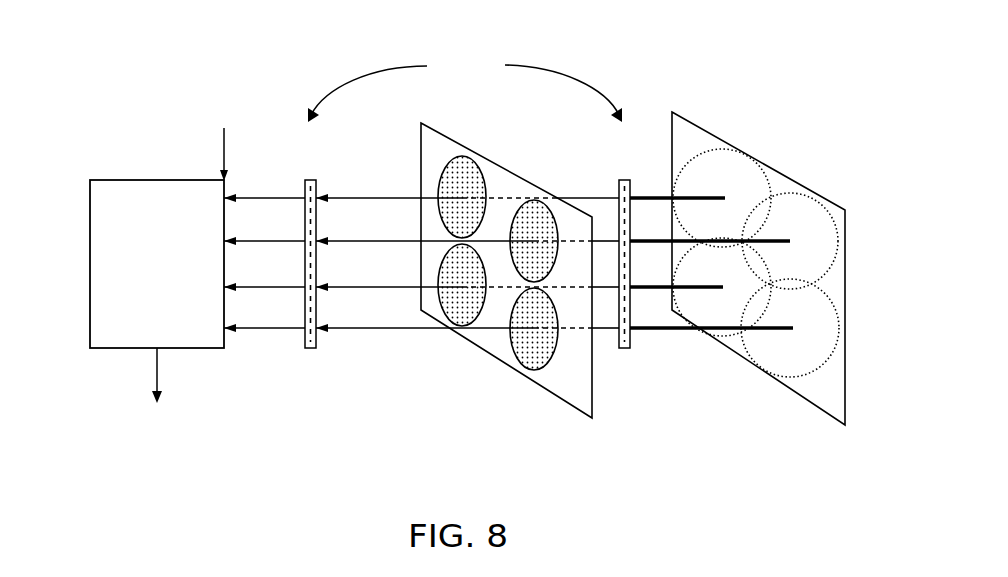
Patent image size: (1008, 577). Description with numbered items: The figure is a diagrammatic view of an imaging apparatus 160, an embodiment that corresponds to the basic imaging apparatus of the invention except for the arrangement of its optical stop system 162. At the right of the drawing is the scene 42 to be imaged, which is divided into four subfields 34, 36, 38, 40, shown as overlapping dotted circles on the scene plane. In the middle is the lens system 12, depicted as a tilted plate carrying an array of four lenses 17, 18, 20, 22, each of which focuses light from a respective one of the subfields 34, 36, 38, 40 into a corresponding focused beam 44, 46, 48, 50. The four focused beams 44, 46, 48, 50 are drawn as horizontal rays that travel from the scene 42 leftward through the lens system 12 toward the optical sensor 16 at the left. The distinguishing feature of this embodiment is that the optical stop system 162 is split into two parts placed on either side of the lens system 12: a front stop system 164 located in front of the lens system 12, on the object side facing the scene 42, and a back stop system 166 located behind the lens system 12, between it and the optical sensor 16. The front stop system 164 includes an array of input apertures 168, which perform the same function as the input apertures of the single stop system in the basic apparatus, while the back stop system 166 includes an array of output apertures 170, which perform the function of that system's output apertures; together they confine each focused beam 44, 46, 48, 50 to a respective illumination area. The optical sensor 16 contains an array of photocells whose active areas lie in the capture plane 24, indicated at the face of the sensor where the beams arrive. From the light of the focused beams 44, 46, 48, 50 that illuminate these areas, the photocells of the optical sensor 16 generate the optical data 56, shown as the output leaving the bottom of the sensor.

The imaging apparatus 160 is at (100, 70).
The optical sensor 16 is at (157, 178).
The capture plane 24 is at (240, 149).
The optical data 56 is at (157, 365).
The focused beam 44 is at (383, 197).
The focused beam 46 is at (383, 240).
The focused beam 48 is at (383, 286).
The focused beam 50 is at (383, 327).
The back stop system 166 is at (345, 255).
The front stop system 164 is at (636, 257).
The output apertures 170 is at (322, 348).
The input apertures 168 is at (636, 349).
The optical stop system 162 is at (465, 87).
The lens system 12 is at (592, 395).
The lens 17 is at (467, 157).
The lens 18 is at (535, 200).
The lens 22 is at (458, 322).
The lens 20 is at (530, 368).
The scene 42 is at (845, 288).
The subfield 34 is at (737, 186).
The subfield 36 is at (820, 228).
The subfield 40 is at (732, 314).
The subfield 38 is at (812, 362).